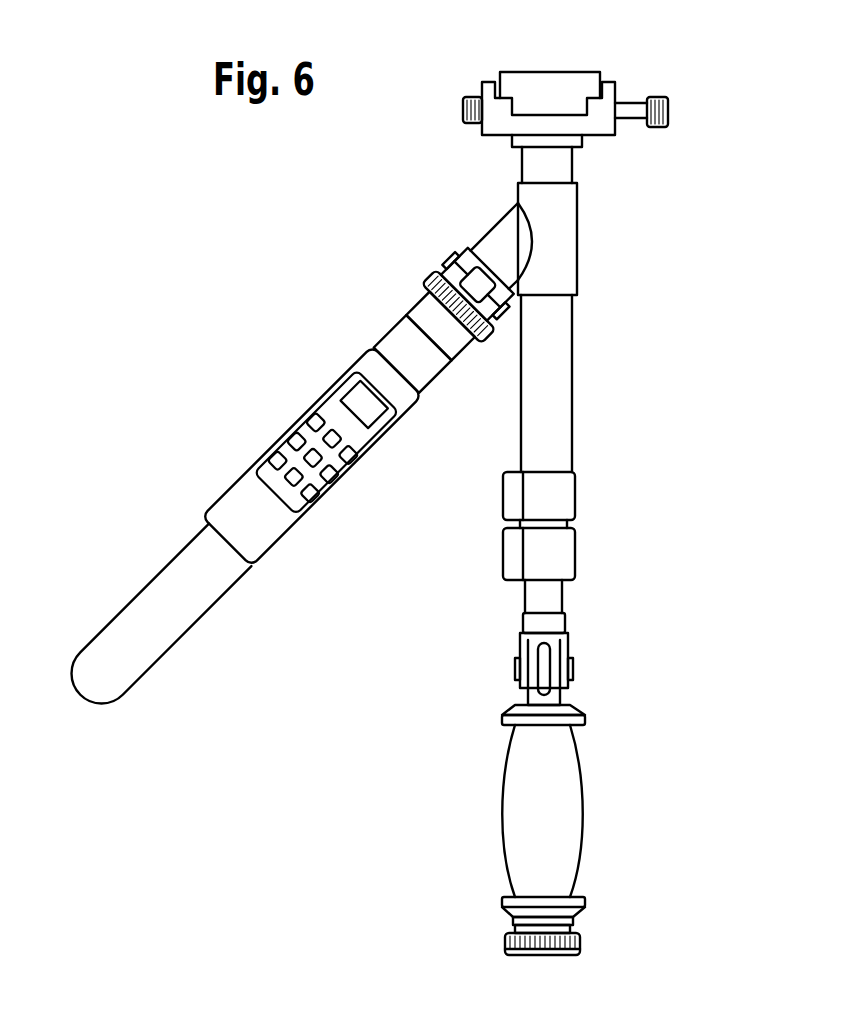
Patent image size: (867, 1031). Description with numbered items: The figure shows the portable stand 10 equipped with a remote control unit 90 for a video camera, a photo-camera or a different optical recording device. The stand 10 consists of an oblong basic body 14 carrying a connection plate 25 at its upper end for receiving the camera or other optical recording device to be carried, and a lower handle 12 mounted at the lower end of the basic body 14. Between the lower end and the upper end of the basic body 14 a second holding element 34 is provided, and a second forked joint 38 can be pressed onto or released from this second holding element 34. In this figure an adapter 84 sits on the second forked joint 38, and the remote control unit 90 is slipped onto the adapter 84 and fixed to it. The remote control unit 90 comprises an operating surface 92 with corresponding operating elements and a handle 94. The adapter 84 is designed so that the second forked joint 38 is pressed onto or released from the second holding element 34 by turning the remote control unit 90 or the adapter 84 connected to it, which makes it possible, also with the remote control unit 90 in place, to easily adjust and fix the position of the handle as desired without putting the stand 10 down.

The portable stand 10 is at (416, 639).
The lower handle 12 is at (565, 808).
The oblong basic body 14 is at (576, 403).
The connection plate 25 is at (496, 105).
The second holding element 34 is at (577, 253).
The second forked joint 38 is at (467, 252).
The adapter 84 is at (411, 276).
The remote control unit 90 is at (271, 419).
The operating surface 92 is at (313, 475).
The handle 94 is at (133, 622).